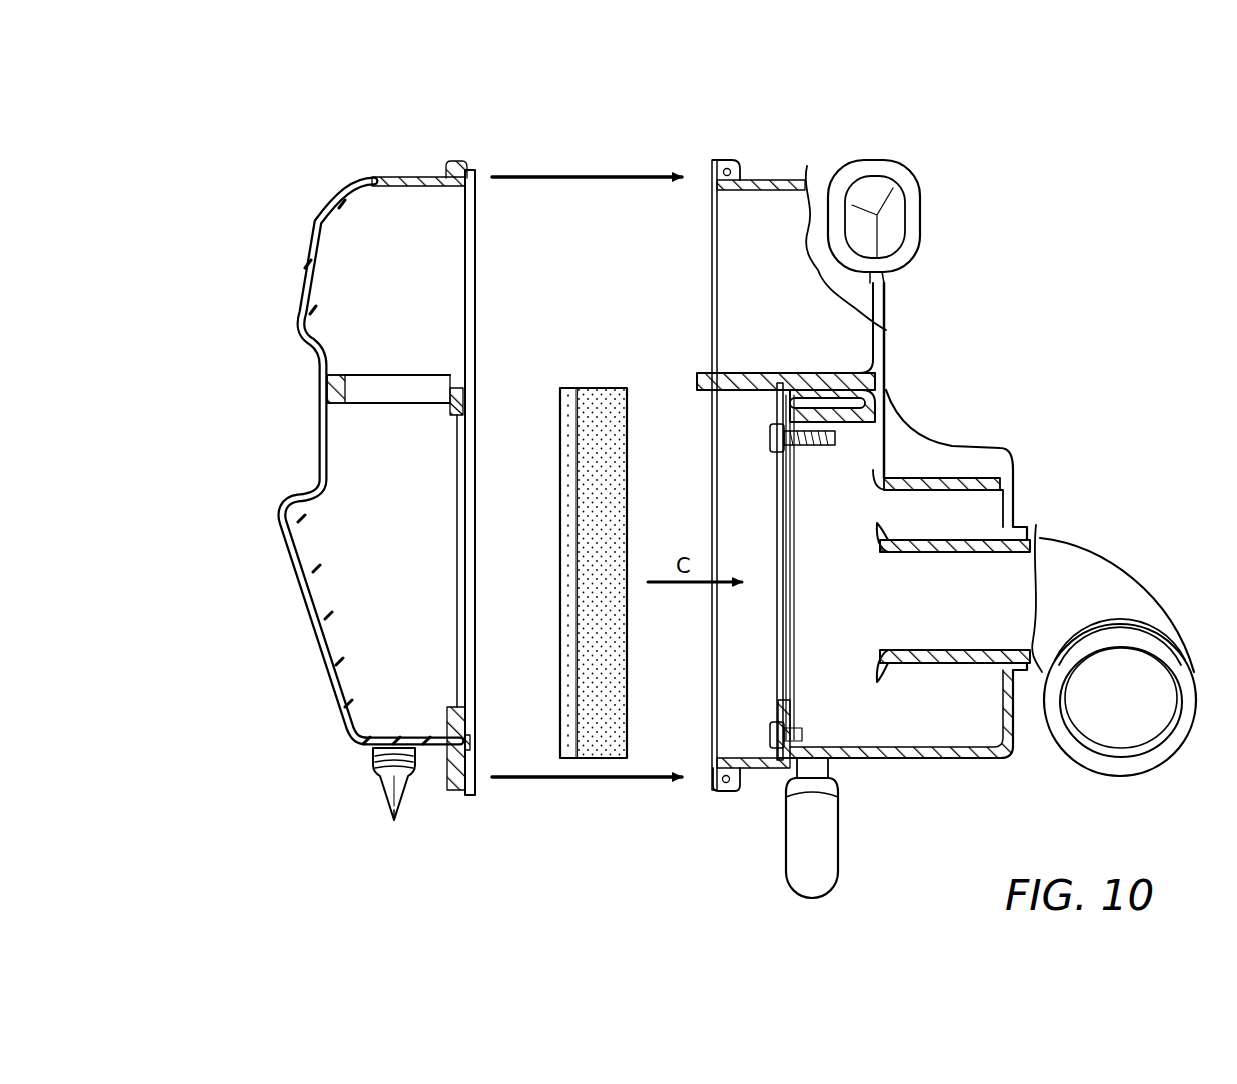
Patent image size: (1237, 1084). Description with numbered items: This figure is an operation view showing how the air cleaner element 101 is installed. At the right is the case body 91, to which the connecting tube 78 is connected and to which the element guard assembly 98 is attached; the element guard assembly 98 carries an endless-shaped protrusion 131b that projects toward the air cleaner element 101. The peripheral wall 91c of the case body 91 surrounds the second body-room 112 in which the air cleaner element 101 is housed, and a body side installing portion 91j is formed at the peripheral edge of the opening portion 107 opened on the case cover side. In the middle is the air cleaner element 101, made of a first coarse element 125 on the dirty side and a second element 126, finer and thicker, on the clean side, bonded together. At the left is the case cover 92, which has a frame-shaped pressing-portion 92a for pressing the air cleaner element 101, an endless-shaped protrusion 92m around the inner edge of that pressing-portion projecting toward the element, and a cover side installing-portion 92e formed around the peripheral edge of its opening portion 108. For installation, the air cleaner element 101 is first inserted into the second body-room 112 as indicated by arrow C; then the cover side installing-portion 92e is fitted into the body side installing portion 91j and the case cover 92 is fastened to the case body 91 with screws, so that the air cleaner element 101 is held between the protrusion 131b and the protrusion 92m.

The case cover 92 is at (300, 247).
The cover side installing-portion 92e is at (447, 163).
The endless-shaped protrusion 92m is at (450, 410).
The frame-shaped pressing-portion 92a is at (450, 406).
The opening portion 108 is at (483, 215).
The air cleaner element 101 is at (560, 620).
The first coarse element 125 is at (575, 745).
The second element 126 is at (598, 730).
The opening portion 107 is at (700, 740).
The case body 91 is at (854, 447).
The peripheral wall 91c is at (727, 383).
The body side installing portion 91j is at (735, 160).
The endless-shaped protrusion 131b is at (783, 410).
The element guard assembly 98 is at (797, 670).
The second body-room 112 is at (746, 720).
The connecting tube 78 is at (1098, 575).